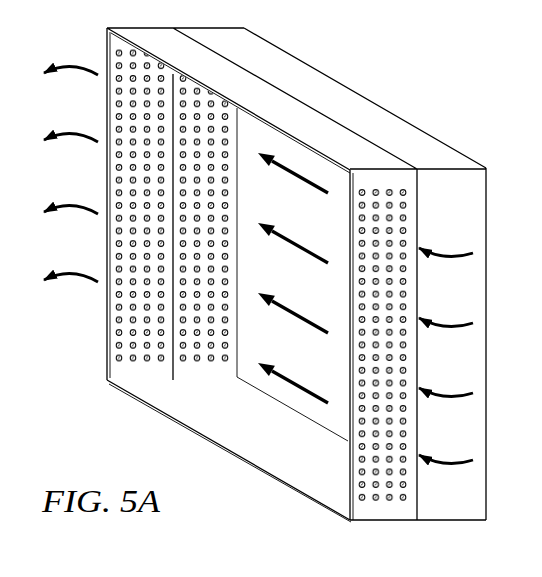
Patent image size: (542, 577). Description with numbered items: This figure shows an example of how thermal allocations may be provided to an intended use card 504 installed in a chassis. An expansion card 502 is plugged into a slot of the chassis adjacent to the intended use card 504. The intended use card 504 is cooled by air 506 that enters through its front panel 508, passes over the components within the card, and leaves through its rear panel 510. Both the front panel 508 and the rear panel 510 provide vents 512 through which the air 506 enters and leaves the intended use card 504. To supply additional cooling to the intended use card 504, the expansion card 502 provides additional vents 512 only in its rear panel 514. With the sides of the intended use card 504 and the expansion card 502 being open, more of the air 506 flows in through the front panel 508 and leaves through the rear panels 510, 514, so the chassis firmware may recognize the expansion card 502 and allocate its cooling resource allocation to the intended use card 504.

The expansion card 502 is at (332, 87).
The intended use card 504 is at (228, 451).
The air 506 is at (72, 66).
The front panel 508 is at (366, 512).
The rear panel 510 is at (117, 372).
The vents 512 is at (378, 182).
The rear panel 514 is at (201, 374).